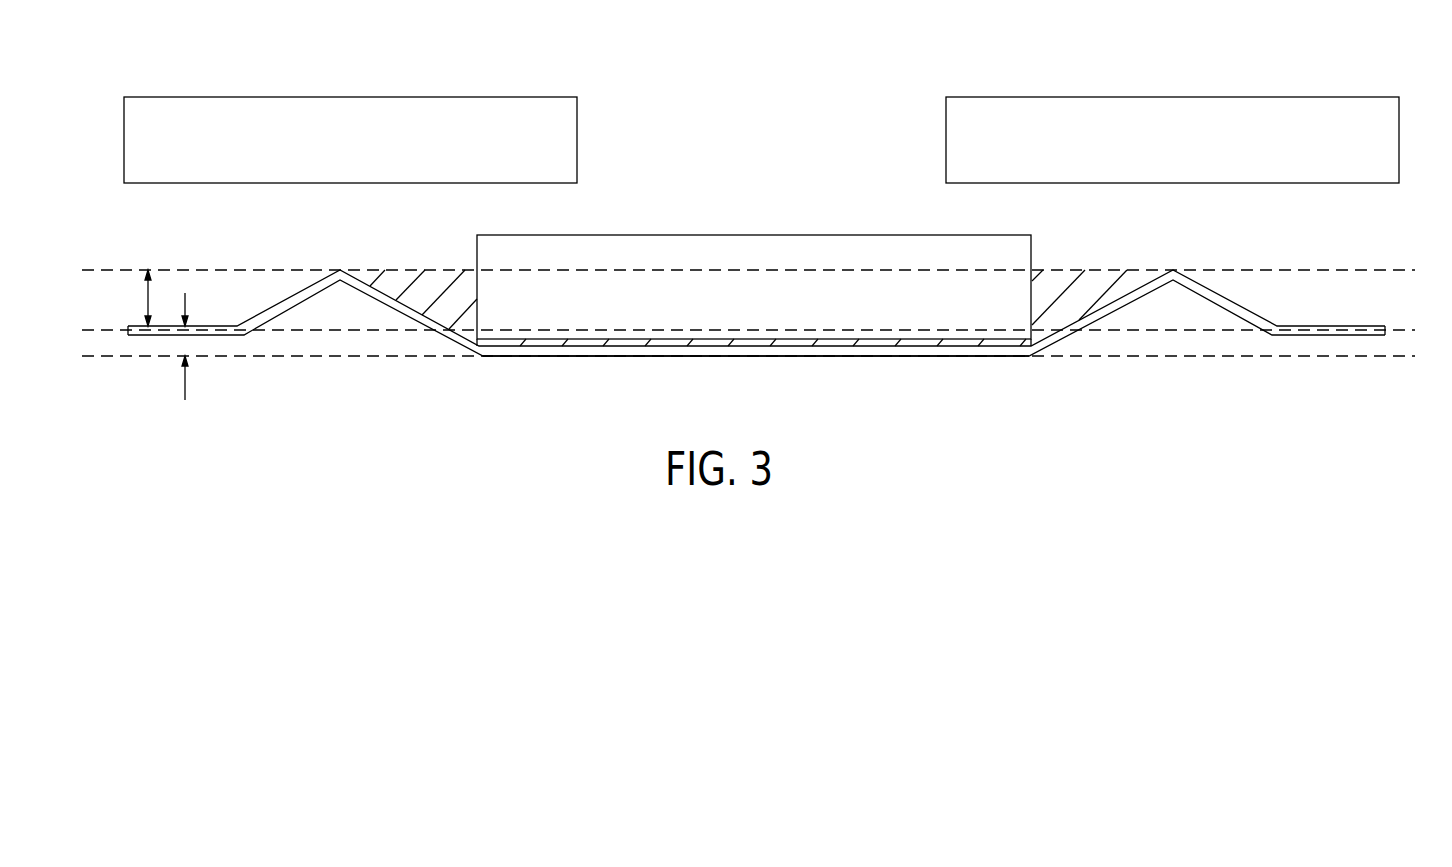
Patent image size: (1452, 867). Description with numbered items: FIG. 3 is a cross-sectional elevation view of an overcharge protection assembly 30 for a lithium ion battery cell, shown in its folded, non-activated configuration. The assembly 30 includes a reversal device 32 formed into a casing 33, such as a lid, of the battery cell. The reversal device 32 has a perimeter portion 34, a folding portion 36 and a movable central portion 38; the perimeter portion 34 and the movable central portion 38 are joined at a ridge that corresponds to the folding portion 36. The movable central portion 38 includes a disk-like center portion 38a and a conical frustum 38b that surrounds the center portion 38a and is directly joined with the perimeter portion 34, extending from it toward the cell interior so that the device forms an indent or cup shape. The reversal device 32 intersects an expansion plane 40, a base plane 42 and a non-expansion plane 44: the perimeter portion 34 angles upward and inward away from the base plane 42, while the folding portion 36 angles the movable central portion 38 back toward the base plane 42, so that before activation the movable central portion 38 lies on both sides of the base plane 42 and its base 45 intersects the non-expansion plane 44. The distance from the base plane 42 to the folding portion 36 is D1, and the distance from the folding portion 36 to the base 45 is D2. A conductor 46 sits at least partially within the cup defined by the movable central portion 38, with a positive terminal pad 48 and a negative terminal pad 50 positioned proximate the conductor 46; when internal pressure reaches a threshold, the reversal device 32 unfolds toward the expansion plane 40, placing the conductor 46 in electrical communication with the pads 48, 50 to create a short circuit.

The overcharge protection assembly 30 is at (853, 42).
The reversal device 32 is at (1258, 244).
The casing 33 is at (206, 326).
The perimeter portion 34 is at (355, 322).
The folding portion 36 is at (310, 287).
The movable central portion 38 is at (748, 310).
The center portion 38a is at (513, 348).
The frustum 38b is at (408, 270).
The expansion plane 40 is at (1382, 268).
The base plane 42 is at (1393, 329).
The non-expansion plane 44 is at (1392, 358).
The base 45 is at (908, 357).
The conductor 46 is at (849, 307).
The positive terminal pad 48 is at (337, 166).
The negative terminal pad 50 is at (1159, 166).
The distance from base plane to folding portion D1 is at (148, 300).
The distance from folding portion to base D2 is at (185, 380).